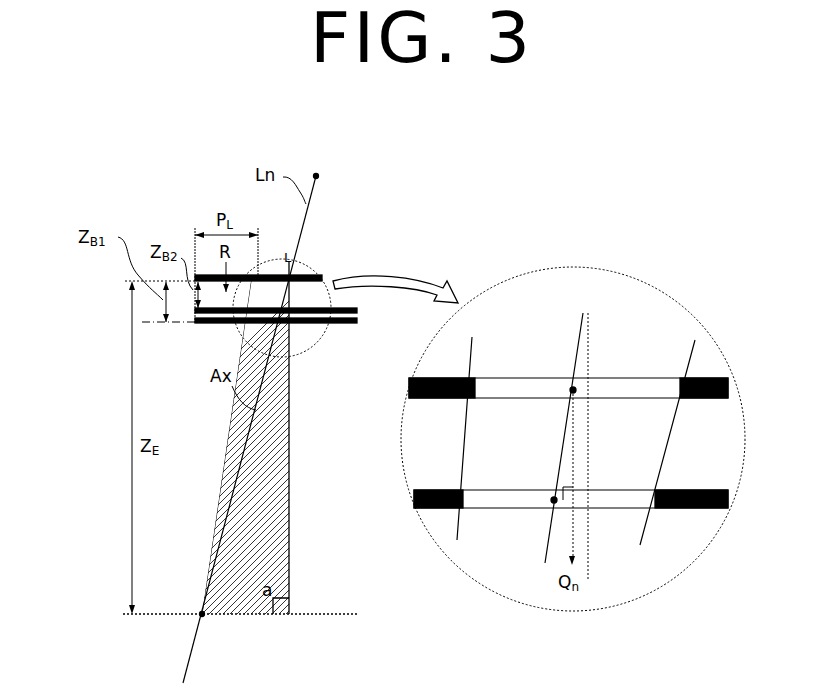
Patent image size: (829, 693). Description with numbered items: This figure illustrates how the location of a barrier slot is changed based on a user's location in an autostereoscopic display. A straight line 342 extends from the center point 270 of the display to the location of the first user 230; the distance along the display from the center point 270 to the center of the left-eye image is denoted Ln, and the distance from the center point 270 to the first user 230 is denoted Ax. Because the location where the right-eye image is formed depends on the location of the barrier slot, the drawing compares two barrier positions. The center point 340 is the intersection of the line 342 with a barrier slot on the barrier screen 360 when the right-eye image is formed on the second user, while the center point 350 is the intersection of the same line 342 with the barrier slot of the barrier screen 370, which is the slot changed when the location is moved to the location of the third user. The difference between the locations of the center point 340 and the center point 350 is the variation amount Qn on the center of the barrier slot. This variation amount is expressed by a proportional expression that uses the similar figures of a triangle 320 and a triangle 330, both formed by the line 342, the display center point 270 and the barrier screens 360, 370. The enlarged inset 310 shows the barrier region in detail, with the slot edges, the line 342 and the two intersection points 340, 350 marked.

The center point of the display 270 is at (316, 176).
The straight line 342 is at (302, 228).
The first user 230 is at (202, 614).
The triangle 320 is at (289, 578).
The lens unit 310 is at (640, 340).
The barrier screen 370 is at (722, 376).
The barrier screen 360 is at (713, 490).
The center point 350 is at (572, 388).
The triangle 330 is at (570, 432).
The center point 340 is at (554, 501).